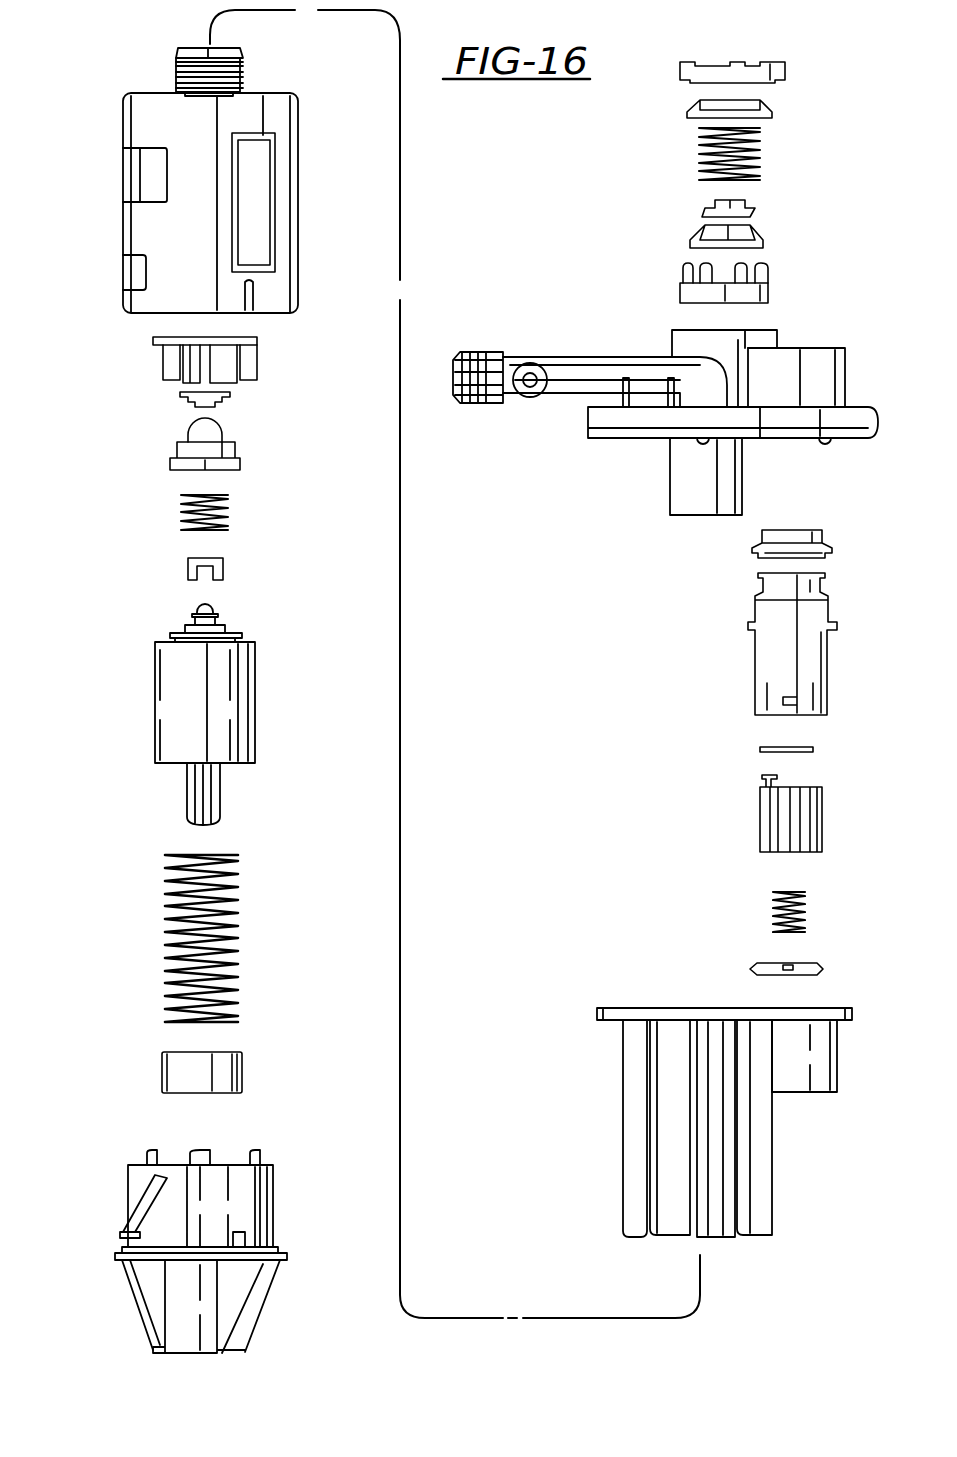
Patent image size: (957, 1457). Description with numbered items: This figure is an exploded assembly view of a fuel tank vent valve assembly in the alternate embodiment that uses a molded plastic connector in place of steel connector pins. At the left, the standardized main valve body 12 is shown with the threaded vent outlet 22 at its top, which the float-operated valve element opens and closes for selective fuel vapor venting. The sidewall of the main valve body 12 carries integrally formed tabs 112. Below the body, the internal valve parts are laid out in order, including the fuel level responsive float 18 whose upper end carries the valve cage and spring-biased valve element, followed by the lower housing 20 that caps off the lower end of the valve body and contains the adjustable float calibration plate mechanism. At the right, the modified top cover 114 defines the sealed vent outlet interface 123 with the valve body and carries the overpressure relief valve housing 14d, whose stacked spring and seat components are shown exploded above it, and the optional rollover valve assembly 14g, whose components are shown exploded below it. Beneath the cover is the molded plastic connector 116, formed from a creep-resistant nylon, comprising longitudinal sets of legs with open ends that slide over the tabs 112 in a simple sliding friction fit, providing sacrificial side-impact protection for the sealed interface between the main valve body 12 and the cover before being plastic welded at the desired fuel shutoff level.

The main valve body 12 is at (124, 233).
The vent outlet 22 is at (176, 62).
The locking tabs 112 is at (265, 162).
The float 18 is at (256, 705).
The lower housing 20 is at (270, 1295).
The overpressure relief valve housing 14d is at (797, 62).
The modified top cover 114 is at (864, 407).
The vent outlet interface 123 is at (685, 490).
The rollover valve assembly 14g is at (728, 525).
The molded plastic connector 116 is at (757, 1156).